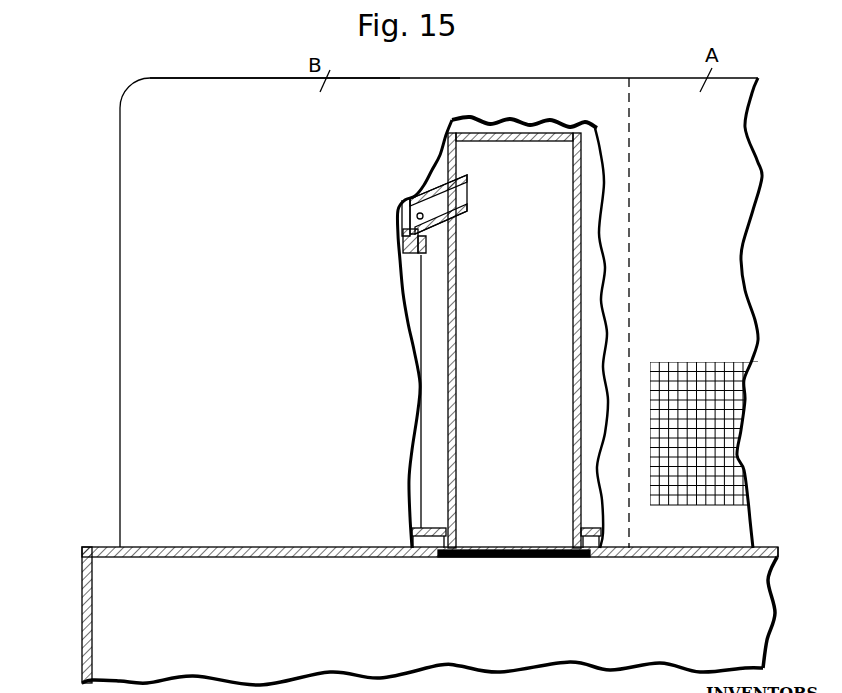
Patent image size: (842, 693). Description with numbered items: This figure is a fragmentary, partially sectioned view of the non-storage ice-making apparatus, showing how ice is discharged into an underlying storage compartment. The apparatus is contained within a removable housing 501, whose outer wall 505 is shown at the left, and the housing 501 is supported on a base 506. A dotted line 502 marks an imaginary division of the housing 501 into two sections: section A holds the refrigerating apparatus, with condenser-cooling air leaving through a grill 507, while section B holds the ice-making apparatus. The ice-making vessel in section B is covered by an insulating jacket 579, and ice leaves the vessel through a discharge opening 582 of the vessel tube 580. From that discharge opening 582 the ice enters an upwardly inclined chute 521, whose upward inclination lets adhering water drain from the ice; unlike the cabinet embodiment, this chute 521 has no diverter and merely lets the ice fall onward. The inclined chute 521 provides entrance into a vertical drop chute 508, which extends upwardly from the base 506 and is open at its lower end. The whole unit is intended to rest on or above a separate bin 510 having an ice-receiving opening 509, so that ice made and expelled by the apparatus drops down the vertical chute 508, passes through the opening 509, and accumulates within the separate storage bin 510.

The removable housing 501 is at (224, 77).
The dotted line 502 is at (631, 175).
The enclosure wall 505 is at (137, 180).
The base 506 is at (432, 528).
The grill 507 is at (725, 428).
The vertical drop chute 508 is at (450, 375).
The ice-receiving opening 509 is at (553, 560).
The separate bin 510 is at (82, 618).
The upwardly inclined chute 521 is at (434, 196).
The insulating jacket 579 is at (415, 292).
The vessel tube 580 is at (403, 236).
The discharge opening 582 is at (410, 214).